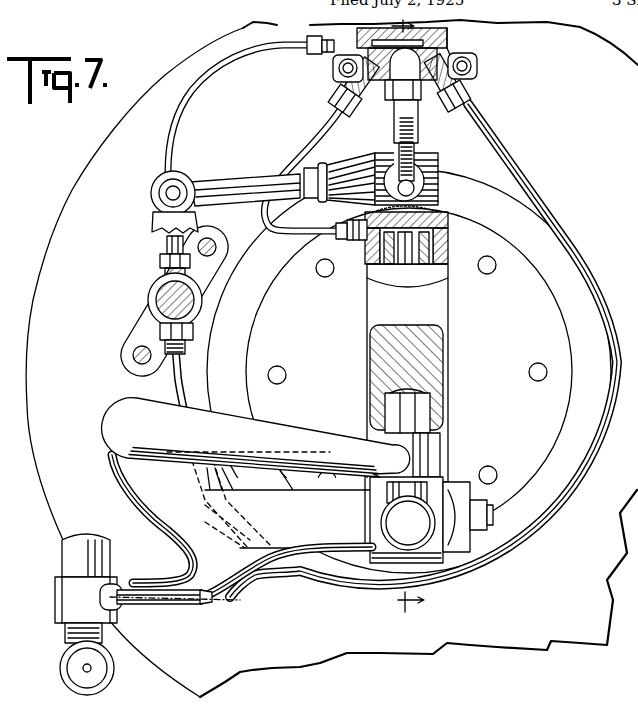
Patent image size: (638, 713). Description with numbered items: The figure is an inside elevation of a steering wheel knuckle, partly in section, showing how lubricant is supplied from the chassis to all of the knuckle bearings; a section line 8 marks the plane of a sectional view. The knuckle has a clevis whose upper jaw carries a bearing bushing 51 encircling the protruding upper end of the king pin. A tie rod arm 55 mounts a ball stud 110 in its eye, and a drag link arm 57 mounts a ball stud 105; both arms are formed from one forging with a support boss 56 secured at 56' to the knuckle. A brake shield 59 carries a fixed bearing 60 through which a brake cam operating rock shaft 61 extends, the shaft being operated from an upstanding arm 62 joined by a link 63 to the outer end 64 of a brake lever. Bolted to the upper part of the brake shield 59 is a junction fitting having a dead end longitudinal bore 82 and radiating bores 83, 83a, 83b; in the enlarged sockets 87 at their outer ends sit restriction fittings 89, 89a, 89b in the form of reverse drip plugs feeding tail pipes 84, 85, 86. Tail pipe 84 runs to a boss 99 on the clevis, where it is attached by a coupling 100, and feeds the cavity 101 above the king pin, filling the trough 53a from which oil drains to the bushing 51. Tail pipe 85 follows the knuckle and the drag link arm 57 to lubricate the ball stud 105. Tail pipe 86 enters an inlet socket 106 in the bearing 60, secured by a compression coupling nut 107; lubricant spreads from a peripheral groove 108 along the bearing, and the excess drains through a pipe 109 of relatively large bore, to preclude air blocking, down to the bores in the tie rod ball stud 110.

The section line 8 is at (398, 324).
The bearing bushing 51 is at (445, 265).
The trough 53a is at (462, 252).
The tie rod arm 55 is at (153, 582).
The support boss 56 is at (310, 508).
The securing connection 56' is at (474, 539).
The drag link arm 57 is at (272, 432).
The brake shield 59 is at (80, 182).
The fixed bearing 60 is at (148, 300).
The brake cam operating rock shaft 61 is at (165, 312).
The upstanding arm 62 is at (150, 217).
The link 63 is at (227, 184).
The outer end of lever 64 is at (440, 194).
The dead end longitudinal bore 82 is at (448, 33).
The radiating bore 83 is at (390, 98).
The radiating bore 83a is at (460, 47).
The radiating bore 83b is at (343, 74).
The tail pipe 84 is at (305, 140).
The tail pipe 85 is at (514, 160).
The tail pipe 86 is at (183, 106).
The enlarged socket 87 is at (318, 33).
The restriction fitting 89 is at (340, 96).
The reverse drip plug 89a is at (445, 100).
The reverse drip plug 89b is at (336, 62).
The boss 99 is at (356, 242).
The coupling 100 is at (332, 232).
The cavity 101 is at (448, 218).
The ball stud 105 is at (418, 518).
The inlet socket 106 is at (160, 262).
The compression coupling nut 107 is at (160, 243).
The peripheral groove 108 is at (158, 290).
The pipe 109 is at (168, 382).
The ball stud 110 is at (64, 660).